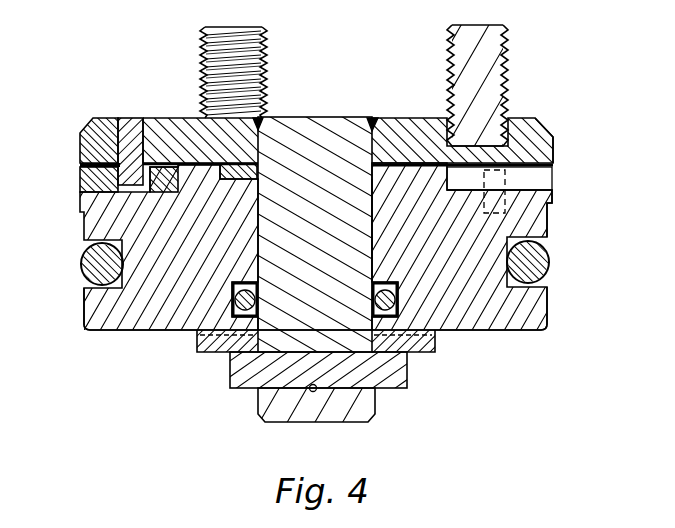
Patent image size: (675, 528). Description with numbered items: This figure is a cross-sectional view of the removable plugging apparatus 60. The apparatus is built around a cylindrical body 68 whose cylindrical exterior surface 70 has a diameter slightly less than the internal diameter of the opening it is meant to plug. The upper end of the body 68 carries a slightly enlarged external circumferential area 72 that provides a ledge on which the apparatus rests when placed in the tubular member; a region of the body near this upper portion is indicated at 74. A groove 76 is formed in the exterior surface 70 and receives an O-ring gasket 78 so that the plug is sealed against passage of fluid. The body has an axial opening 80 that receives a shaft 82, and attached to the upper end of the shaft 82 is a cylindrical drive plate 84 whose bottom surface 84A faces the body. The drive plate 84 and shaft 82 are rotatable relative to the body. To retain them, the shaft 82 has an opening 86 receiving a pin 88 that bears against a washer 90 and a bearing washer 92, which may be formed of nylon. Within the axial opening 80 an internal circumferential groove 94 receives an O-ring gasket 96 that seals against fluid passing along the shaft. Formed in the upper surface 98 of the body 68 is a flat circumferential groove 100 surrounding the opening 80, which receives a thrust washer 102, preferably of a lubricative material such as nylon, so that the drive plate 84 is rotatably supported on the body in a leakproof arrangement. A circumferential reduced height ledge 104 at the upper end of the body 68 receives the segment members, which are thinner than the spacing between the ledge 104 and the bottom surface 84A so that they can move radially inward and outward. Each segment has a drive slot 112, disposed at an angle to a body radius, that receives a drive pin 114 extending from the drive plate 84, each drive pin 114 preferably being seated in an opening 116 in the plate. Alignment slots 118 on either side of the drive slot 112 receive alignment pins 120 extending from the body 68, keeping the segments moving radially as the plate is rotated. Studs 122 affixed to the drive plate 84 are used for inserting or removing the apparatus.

The plugging apparatus 60 is at (566, 103).
The cylindrical body 68 is at (495, 318).
The cylindrical exterior surface 70 is at (550, 301).
The enlarged external circumferential area 72 is at (555, 201).
The body 74 is at (80, 210).
The groove 76 is at (510, 259).
The O-ring gasket 78 is at (540, 258).
The axial opening 80 is at (262, 248).
The shaft 82 is at (288, 338).
The drive plate 84 is at (198, 128).
The bottom surface of the drive plate 84A is at (432, 158).
The opening 86 is at (317, 391).
The pin 88 is at (400, 389).
The washer 90 is at (410, 355).
The bearing washer 92 is at (440, 333).
The internal circumferential groove 94 is at (197, 332).
The O-ring gasket 96 is at (401, 279).
The upper surface 98 is at (199, 168).
The flat circumferential groove 100 is at (237, 180).
The thrust washer 102 is at (392, 118).
The reduced height ledge 104 is at (82, 183).
The drive slot 112 is at (118, 160).
The drive pin 114 is at (138, 125).
The opening 116 is at (118, 119).
The alignment slot 118 is at (535, 148).
The alignment pin 120 is at (520, 178).
The stud 122 is at (262, 48).